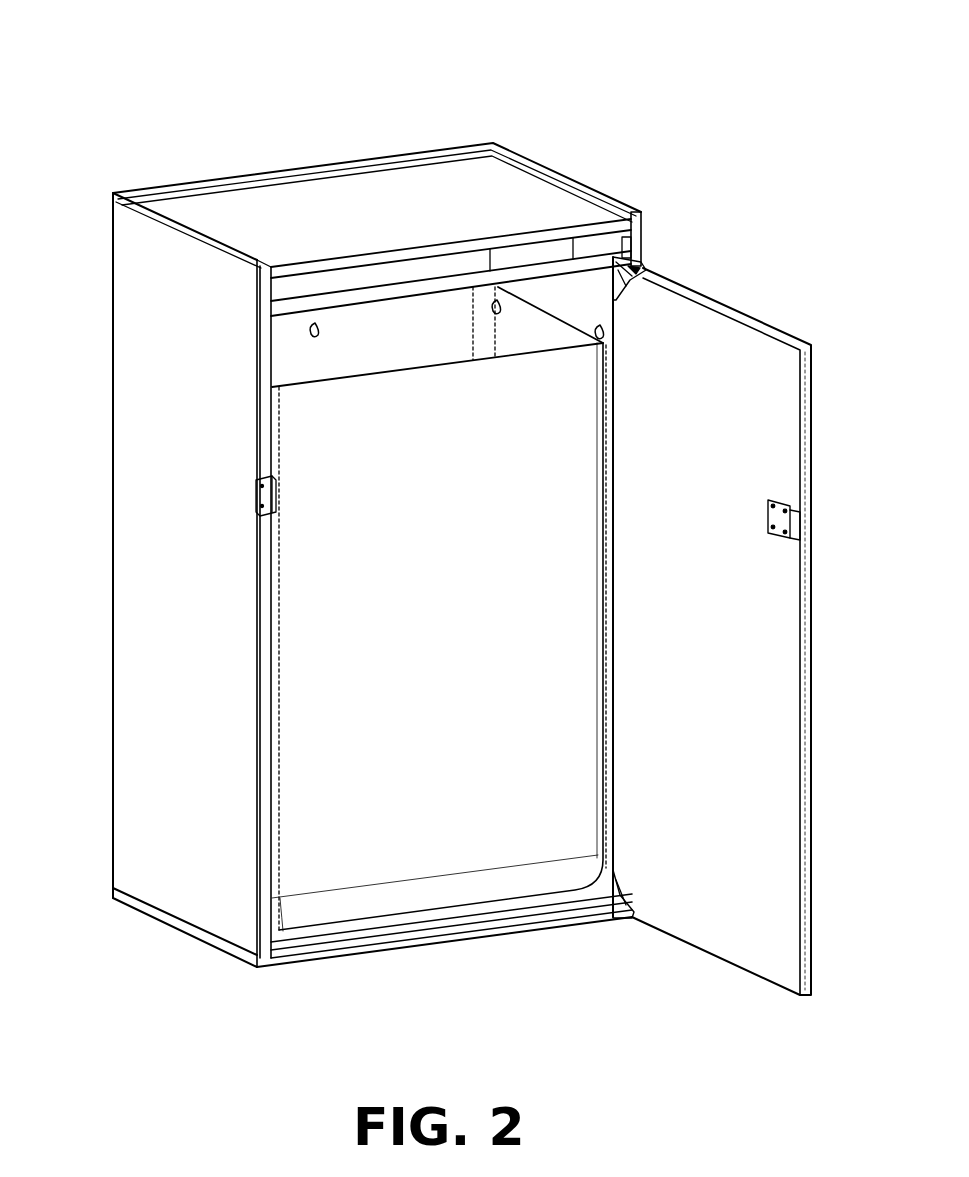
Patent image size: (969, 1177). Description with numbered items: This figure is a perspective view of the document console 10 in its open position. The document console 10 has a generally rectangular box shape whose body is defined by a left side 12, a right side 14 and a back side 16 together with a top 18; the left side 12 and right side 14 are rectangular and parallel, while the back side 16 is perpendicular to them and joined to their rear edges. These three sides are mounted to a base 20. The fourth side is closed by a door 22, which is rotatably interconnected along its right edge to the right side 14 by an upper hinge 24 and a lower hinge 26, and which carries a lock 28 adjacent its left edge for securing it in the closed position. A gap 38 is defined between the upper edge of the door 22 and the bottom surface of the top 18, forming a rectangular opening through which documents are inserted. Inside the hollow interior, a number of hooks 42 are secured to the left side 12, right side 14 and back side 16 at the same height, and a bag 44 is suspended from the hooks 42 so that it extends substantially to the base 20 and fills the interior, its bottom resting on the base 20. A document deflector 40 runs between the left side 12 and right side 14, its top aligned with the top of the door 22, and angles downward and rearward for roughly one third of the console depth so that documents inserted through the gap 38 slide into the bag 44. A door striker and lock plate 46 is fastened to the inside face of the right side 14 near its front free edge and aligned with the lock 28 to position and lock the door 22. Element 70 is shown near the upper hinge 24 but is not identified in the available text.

The document console 10 is at (100, 80).
The left side 12 is at (135, 284).
The right side 14 is at (644, 234).
The back side 16 is at (246, 178).
The top 18 is at (384, 200).
The base 20 is at (370, 950).
The door 22 is at (731, 378).
The upper hinge 24 is at (648, 268).
The lower hinge 26 is at (618, 905).
The lock 28 is at (780, 503).
The gap 38 is at (296, 285).
The document deflector 40 is at (296, 308).
The hooks 42 is at (310, 336).
The bag 44 is at (435, 808).
The door striker and lock plate 46 is at (266, 500).
The hinge block 70 is at (632, 248).